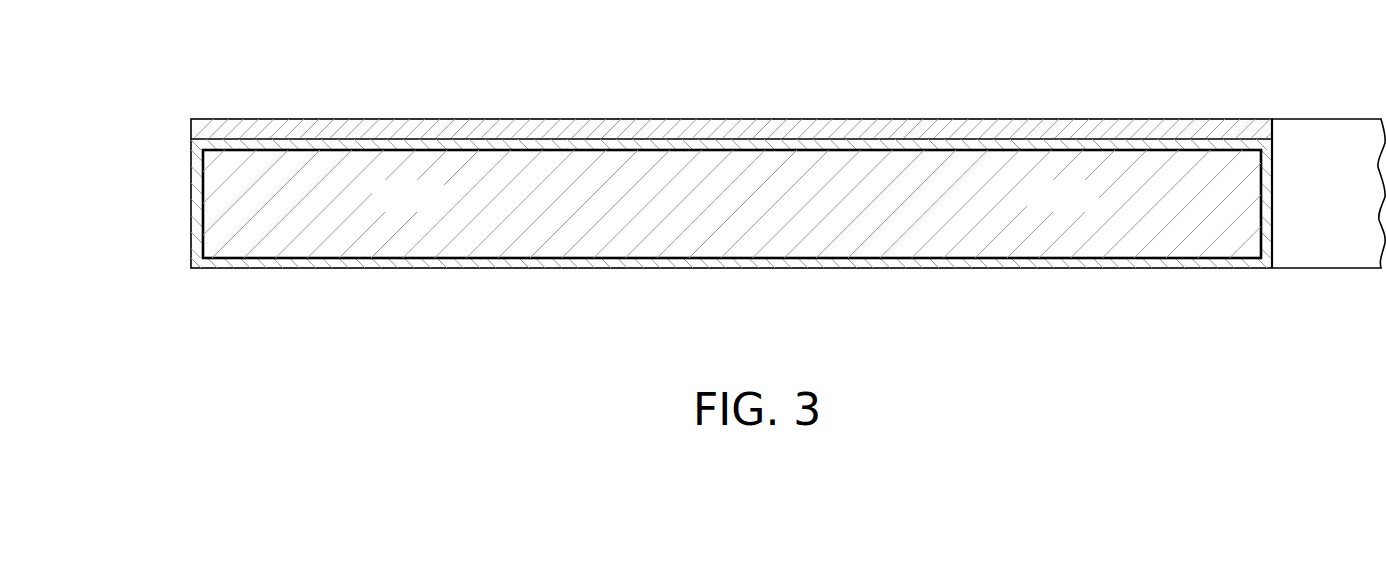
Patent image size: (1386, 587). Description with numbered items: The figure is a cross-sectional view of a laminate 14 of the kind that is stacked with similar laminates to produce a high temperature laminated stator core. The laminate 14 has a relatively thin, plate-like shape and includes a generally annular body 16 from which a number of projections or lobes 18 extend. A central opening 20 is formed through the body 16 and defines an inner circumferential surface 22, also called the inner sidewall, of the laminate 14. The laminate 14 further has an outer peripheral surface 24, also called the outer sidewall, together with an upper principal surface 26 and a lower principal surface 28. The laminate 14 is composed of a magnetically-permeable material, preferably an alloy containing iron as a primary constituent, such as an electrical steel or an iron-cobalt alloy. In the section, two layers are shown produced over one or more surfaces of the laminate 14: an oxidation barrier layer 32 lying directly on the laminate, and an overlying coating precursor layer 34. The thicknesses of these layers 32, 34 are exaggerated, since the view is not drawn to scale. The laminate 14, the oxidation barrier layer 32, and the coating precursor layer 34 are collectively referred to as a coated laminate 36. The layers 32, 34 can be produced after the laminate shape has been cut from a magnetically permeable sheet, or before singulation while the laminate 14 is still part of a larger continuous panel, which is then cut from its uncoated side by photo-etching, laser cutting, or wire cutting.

The laminate 14 is at (910, 251).
The annular body 16 is at (1093, 210).
The lobes 18 is at (440, 210).
The central opening 20 is at (1362, 250).
The inner circumferential surface 22 is at (1262, 178).
The outer peripheral surface 24 is at (198, 170).
The upper principal surface 26 is at (596, 148).
The lower principal surface 28 is at (445, 261).
The oxidation barrier layer 32 is at (737, 145).
The coating precursor layer 34 is at (947, 130).
The coated laminate 36 is at (189, 118).